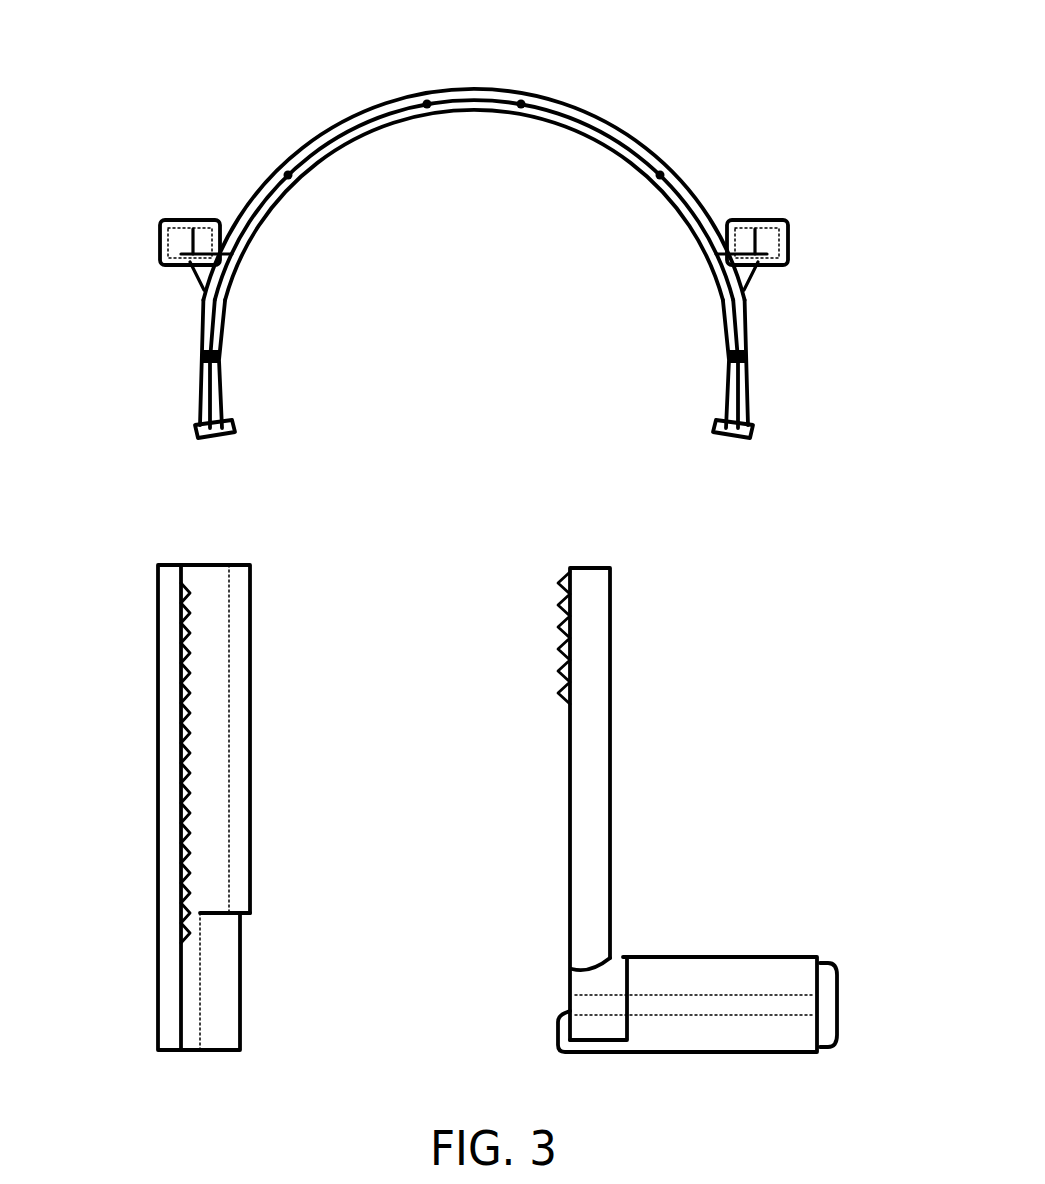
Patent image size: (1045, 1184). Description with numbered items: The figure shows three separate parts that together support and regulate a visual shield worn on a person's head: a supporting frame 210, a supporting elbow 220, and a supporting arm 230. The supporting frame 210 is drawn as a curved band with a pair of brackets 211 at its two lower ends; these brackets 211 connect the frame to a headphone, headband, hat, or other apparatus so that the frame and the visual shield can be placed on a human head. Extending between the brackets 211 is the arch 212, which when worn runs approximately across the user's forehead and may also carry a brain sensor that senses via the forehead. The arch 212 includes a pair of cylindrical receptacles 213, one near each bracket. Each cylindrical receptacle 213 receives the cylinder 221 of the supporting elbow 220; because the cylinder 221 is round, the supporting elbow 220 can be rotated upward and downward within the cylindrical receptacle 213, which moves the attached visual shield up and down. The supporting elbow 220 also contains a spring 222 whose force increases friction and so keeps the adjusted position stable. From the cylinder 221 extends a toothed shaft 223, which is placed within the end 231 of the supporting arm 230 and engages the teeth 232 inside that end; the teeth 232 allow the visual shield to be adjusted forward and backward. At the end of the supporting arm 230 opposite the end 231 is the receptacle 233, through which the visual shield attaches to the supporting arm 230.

The supporting frame 210 is at (245, 86).
The brackets 211 is at (748, 432).
The arch 212 is at (580, 100).
The cylindrical receptacles 213 is at (760, 215).
The supporting elbow 220 is at (702, 598).
The cylinder 221 is at (728, 957).
The spring 222 is at (650, 1003).
The toothed shaft 223 is at (563, 769).
The supporting arm 230 is at (332, 598).
The end 231 is at (245, 968).
The teeth 232 is at (190, 715).
The receptacle 233 is at (207, 568).